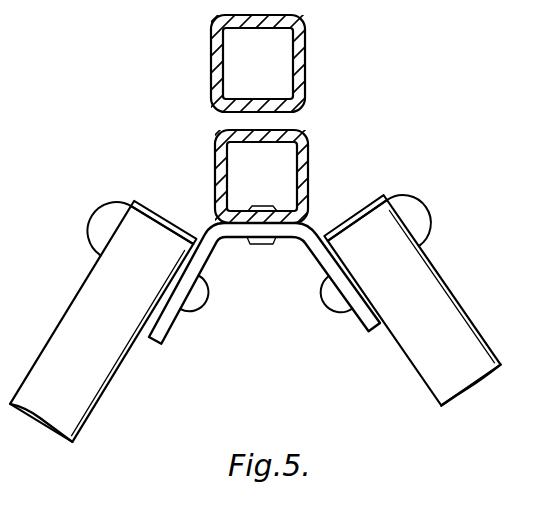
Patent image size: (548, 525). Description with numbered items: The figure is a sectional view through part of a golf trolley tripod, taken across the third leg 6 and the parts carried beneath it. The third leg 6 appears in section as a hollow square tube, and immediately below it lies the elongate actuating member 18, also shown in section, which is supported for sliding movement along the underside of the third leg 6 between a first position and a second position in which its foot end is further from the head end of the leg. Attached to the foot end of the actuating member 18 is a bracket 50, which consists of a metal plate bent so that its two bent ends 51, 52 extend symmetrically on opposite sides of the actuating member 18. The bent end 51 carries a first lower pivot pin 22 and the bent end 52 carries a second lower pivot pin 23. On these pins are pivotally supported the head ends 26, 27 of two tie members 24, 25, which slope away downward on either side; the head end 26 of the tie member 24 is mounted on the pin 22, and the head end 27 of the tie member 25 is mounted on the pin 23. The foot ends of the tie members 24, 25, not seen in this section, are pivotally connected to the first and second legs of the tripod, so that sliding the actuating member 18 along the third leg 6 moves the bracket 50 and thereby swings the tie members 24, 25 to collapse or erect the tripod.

The third leg 6 is at (302, 68).
The actuating member 18 is at (220, 148).
The first lower pivot pin 22 is at (102, 233).
The second lower pivot pin 23 is at (425, 232).
The tie member 24 is at (88, 378).
The tie member 25 is at (430, 380).
The head end 26 is at (158, 238).
The head end 27 is at (355, 232).
The bracket 50 is at (242, 229).
The bent end 51 is at (175, 306).
The bent end 52 is at (367, 328).